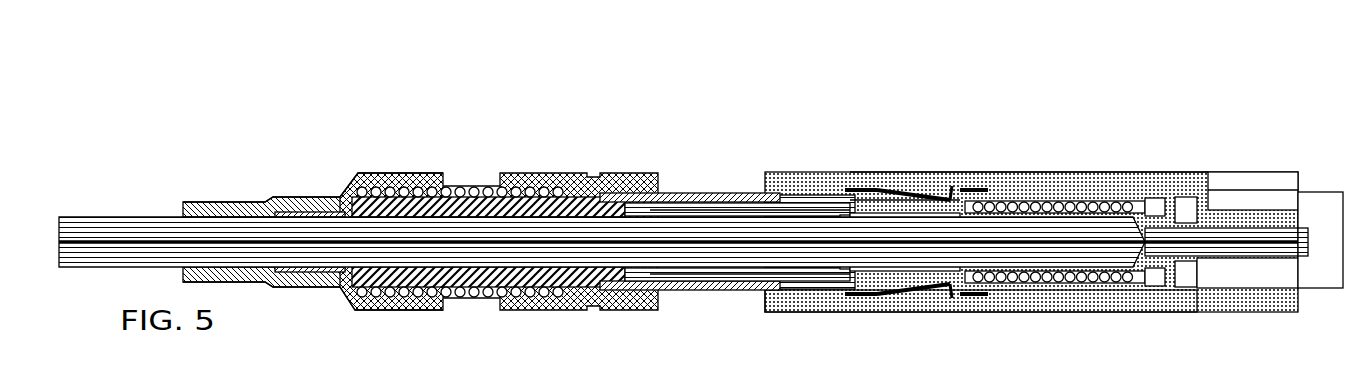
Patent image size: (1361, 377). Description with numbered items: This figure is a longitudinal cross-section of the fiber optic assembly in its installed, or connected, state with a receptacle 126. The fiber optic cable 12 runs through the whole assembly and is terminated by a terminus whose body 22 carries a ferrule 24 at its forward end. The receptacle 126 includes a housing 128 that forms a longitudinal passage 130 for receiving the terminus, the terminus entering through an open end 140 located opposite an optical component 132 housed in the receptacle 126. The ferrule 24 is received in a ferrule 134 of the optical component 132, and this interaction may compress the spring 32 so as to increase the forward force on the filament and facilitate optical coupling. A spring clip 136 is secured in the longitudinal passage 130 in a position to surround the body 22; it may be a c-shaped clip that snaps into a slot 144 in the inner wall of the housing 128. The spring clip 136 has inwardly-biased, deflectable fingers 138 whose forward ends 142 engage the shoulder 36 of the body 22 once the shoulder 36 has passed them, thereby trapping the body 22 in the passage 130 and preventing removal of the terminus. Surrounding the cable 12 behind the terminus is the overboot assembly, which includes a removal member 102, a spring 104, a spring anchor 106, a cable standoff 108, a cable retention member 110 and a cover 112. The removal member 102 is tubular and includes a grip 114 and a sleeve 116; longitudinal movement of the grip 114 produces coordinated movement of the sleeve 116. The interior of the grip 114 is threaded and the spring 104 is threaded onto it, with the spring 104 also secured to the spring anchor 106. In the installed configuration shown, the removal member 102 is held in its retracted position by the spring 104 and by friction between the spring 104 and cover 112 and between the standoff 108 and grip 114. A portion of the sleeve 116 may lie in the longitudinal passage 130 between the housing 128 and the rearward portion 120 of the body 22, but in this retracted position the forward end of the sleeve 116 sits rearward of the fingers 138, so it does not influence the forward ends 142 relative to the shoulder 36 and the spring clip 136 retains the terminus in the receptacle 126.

The fiber optic cable 12 is at (146, 210).
The body 22 is at (1075, 297).
The ferrule 24 is at (1256, 213).
The spring 32 is at (1036, 284).
The shoulder 36 is at (943, 289).
The removal member 102 is at (348, 103).
The spring 104 is at (490, 179).
The spring anchor 106 is at (373, 179).
The cable standoff 108 is at (469, 179).
The cable retention member 110 is at (334, 189).
The cover 112 is at (257, 192).
The grip 114 is at (610, 164).
The sleeve 116 is at (702, 184).
The rearward portion 120 is at (837, 287).
The receptacle 126 is at (802, 164).
The housing 128 is at (1058, 169).
The longitudinal passage 130 is at (1135, 286).
The optical component 132 is at (1322, 185).
The ferrule 134 is at (1222, 287).
The spring clip 136 is at (871, 177).
The fingers 138 is at (906, 177).
The open end 140 is at (757, 297).
The forward ends 142 is at (956, 179).
The slot 144 is at (934, 181).